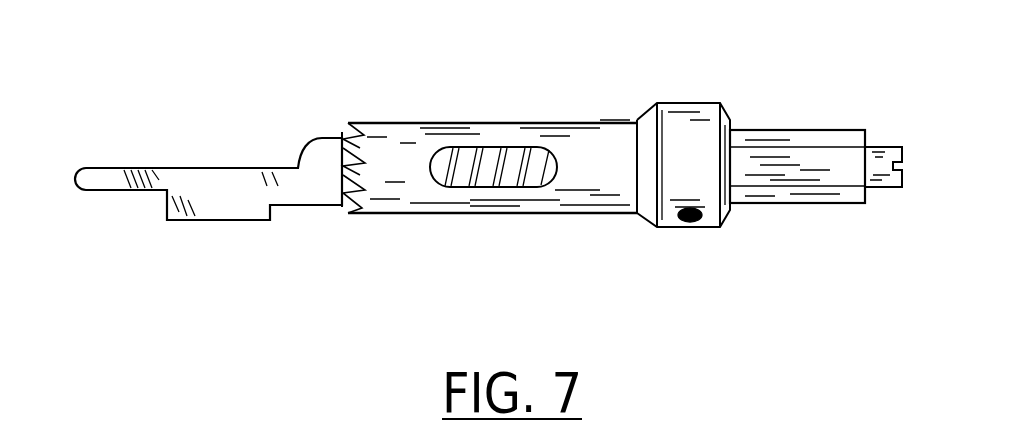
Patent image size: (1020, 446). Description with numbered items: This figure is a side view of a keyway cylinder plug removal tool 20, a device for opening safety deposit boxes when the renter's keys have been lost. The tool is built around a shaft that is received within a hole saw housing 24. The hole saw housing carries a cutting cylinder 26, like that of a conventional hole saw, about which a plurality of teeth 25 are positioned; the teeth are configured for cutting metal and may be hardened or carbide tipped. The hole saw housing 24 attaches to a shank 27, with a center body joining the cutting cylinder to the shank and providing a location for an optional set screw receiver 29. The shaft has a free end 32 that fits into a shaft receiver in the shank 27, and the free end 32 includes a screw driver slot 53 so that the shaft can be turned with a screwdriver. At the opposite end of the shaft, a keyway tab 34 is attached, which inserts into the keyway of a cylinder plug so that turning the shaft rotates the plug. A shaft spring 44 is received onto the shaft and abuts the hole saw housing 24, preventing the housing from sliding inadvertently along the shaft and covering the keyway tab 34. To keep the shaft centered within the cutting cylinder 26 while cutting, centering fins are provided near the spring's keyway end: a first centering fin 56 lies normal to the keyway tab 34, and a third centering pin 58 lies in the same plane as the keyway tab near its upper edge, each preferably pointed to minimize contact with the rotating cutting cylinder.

The removal tool 20 is at (600, 320).
The hole saw housing 24 is at (635, 258).
The teeth 25 is at (343, 207).
The cutting cylinder 26 is at (402, 130).
The shank 27 is at (747, 157).
The set screw receiver 29 is at (667, 227).
The free end 32 is at (895, 147).
The keyway tab 34 is at (212, 188).
The shaft spring 44 is at (473, 160).
The screw driver slot 53 is at (895, 187).
The first centering fin 56 is at (342, 167).
The third centering pin 58 is at (342, 138).